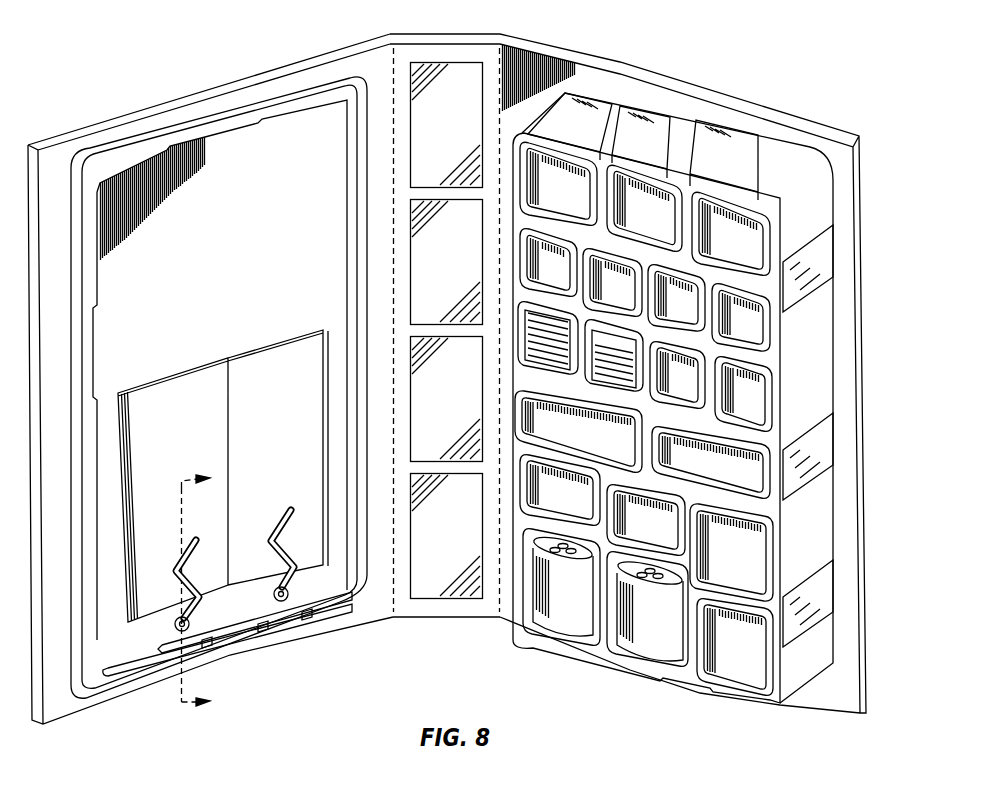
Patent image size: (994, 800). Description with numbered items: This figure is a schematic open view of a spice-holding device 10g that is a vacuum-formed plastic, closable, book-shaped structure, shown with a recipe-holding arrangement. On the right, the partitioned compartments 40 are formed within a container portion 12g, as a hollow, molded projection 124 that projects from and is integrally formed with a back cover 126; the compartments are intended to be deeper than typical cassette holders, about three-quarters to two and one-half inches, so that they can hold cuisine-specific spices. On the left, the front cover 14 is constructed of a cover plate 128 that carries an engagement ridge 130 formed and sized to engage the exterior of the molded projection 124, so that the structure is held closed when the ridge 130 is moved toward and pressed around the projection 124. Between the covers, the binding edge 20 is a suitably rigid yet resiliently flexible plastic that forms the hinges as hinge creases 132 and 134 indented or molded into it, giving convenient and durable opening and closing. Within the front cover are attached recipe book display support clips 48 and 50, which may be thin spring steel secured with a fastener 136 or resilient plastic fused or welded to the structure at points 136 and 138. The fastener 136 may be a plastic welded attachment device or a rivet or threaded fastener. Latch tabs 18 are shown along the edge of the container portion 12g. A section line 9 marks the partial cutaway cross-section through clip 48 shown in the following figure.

The front cover 14 is at (127, 118).
The cover plate 128 is at (70, 702).
The engagement ridge 130 is at (130, 678).
The binding edge 20 is at (443, 38).
The hinge crease 132 is at (390, 55).
The hinge crease 134 is at (500, 53).
The back cover 126 is at (861, 715).
The spice-holding device 10g is at (703, 105).
The container portion 12g is at (633, 100).
The latch tabs 18 is at (812, 262).
The molded projection 124 is at (770, 700).
The partitioned compartments 40 is at (668, 657).
The recipe book display support clip 48 is at (193, 627).
The recipe book display support clip 50 is at (290, 596).
The fastener 136 is at (207, 642).
The attachment point 138 is at (250, 620).
The section line 9 is at (202, 598).